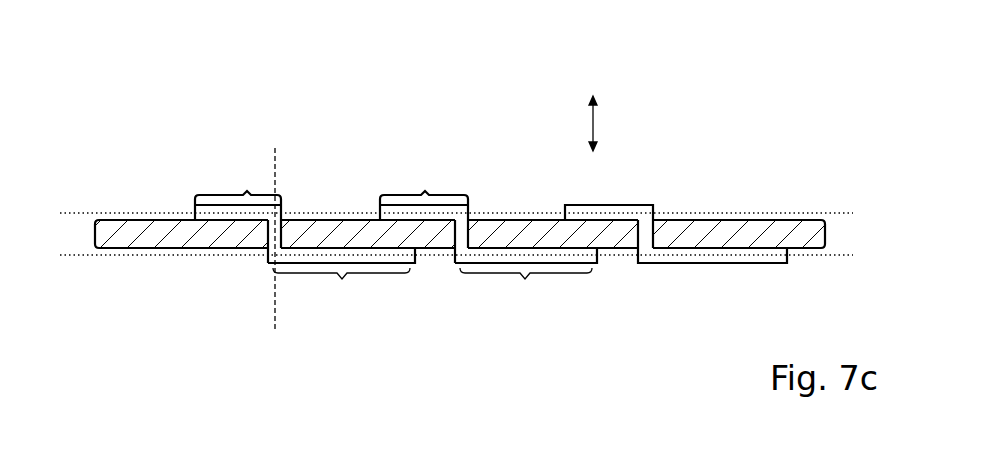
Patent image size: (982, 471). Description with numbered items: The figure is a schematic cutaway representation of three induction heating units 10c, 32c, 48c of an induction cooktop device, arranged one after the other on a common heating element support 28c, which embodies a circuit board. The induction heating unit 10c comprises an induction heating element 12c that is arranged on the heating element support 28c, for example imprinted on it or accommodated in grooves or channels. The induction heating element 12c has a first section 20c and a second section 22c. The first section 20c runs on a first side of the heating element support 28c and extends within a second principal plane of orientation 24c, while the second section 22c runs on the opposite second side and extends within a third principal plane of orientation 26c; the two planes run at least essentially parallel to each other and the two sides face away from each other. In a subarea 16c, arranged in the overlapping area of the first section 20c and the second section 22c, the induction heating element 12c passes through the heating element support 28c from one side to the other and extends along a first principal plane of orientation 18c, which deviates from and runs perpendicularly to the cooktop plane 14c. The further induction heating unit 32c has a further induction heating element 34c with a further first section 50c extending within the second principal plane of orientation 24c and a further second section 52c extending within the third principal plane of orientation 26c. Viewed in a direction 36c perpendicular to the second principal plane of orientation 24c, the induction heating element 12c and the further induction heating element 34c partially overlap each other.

The induction heating unit 10c is at (265, 133).
The induction heating element 12c is at (301, 238).
The cooktop plane 14c is at (464, 190).
The second principal plane of orientation 24c is at (112, 214).
The subarea 16c is at (302, 281).
The first principal plane of orientation 18c is at (277, 157).
The first section 20c is at (247, 196).
The second section 22c is at (341, 282).
The third principal plane of orientation 26c is at (228, 257).
The heating element support 28c is at (803, 220).
The further induction heating unit 32c is at (497, 178).
The further induction heating element 34c is at (479, 207).
The direction 36c is at (595, 123).
The induction heating unit 48c is at (692, 177).
The further first section 50c is at (425, 194).
The further second section 52c is at (526, 283).